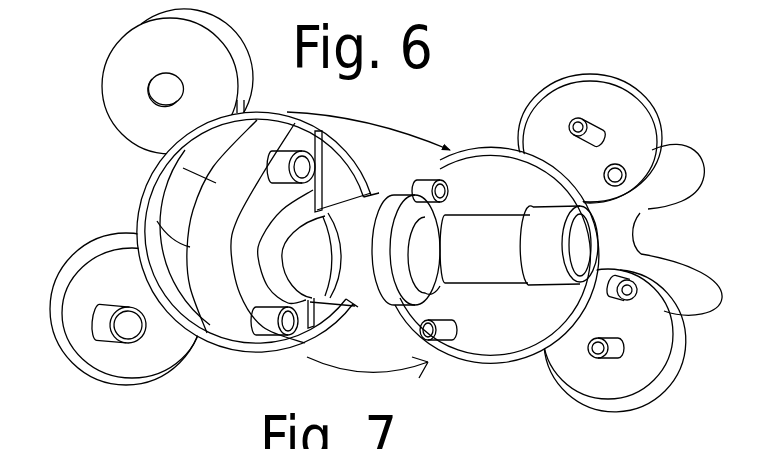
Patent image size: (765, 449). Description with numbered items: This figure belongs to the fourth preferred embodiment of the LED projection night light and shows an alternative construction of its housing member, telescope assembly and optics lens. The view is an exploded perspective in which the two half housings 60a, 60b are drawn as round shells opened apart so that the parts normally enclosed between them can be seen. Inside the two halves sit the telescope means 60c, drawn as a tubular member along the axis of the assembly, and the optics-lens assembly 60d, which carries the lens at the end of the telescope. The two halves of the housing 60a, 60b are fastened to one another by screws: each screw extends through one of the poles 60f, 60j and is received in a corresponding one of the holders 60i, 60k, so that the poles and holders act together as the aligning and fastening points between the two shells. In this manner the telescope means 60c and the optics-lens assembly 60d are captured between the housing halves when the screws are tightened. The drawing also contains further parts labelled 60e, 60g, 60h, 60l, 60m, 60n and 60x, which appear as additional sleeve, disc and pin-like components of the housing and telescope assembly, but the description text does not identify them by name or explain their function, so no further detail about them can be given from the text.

The half housing 60a is at (125, 100).
The half housing 60b is at (628, 118).
The telescope means 60c is at (493, 267).
The optics-lens assembly 60d is at (554, 266).
The sleeve 60e is at (368, 300).
The pole 60f is at (400, 208).
The third disc 60g is at (130, 328).
The fourth disc 60h is at (598, 356).
The holder 60i is at (310, 167).
The pole 60j is at (446, 183).
The holder 60k is at (295, 335).
The pin 60l is at (628, 184).
The pin 60m is at (630, 288).
The plate 60n is at (324, 214).
The pin 60x is at (572, 124).